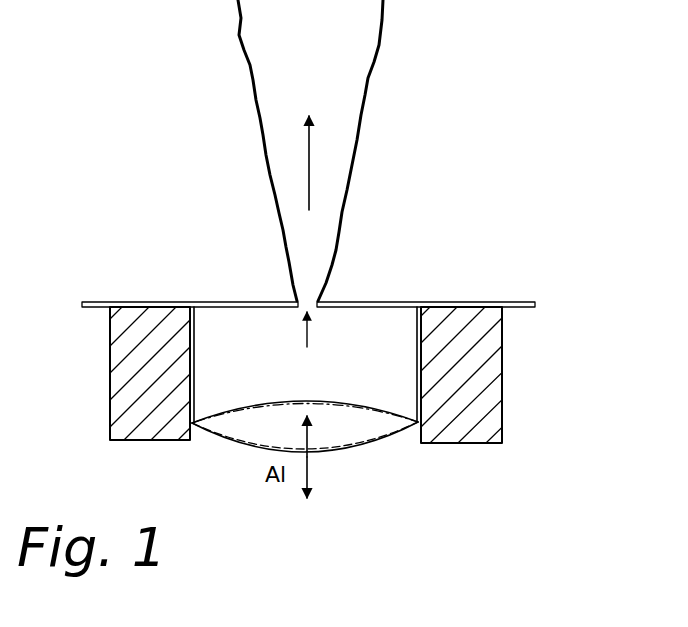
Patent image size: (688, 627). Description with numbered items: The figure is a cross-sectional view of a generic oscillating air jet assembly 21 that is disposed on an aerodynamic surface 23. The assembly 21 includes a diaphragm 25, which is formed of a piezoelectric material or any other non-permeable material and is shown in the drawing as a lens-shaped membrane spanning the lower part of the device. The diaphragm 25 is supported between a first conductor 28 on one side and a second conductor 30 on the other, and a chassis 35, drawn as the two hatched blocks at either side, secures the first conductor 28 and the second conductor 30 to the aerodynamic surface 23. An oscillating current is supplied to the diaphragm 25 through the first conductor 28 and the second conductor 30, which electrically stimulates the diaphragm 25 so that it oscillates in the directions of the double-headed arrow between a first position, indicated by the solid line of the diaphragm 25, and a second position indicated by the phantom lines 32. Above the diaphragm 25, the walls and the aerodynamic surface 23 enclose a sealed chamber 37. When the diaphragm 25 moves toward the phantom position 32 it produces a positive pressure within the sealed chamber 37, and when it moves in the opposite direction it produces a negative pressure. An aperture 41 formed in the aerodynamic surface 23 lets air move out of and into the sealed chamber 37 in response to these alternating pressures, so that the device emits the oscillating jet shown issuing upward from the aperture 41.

The oscillating air jet assembly 21 is at (450, 250).
The aerodynamic surface 23 is at (212, 302).
The diaphragm 25 is at (382, 446).
The first conductor 28 is at (196, 357).
The second conductor 30 is at (414, 338).
The second position of the diaphragm 32 is at (262, 402).
The chassis 35 is at (110, 393).
The sealed chamber 37 is at (389, 395).
The aperture 41 is at (307, 352).